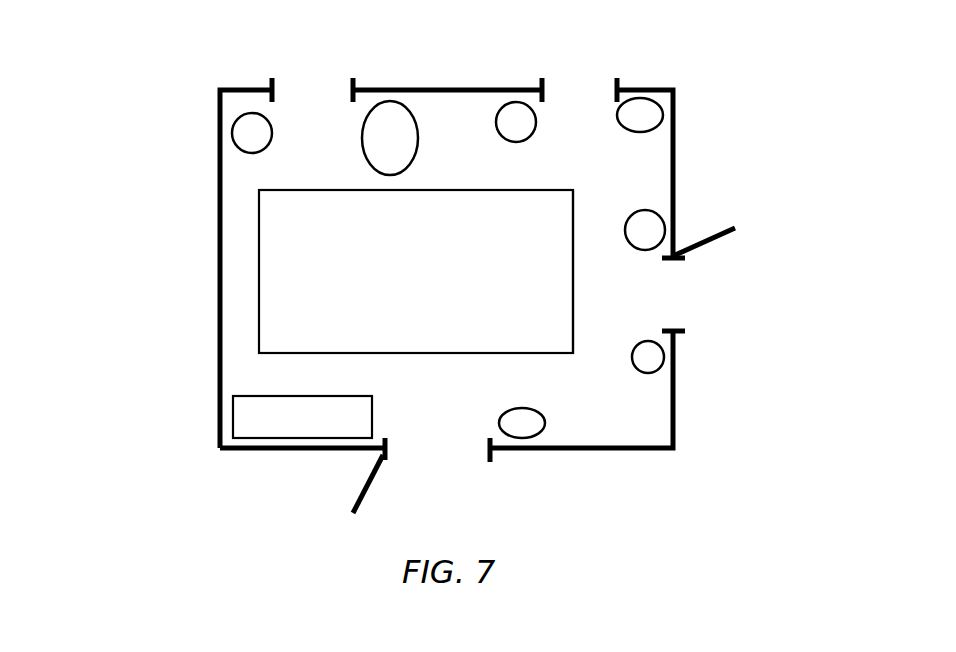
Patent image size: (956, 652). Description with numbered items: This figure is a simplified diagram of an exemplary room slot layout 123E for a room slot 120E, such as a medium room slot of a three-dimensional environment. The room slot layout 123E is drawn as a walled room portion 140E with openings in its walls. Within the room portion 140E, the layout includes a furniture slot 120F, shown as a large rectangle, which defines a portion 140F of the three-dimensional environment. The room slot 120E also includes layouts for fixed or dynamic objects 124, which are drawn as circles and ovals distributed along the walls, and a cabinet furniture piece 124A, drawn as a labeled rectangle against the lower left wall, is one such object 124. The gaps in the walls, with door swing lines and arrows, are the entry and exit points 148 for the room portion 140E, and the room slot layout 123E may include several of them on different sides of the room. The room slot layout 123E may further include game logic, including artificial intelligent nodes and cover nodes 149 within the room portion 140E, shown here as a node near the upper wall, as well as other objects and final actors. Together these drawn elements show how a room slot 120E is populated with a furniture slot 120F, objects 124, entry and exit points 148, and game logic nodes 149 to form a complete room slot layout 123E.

The room slot 120E is at (203, 70).
The furniture slot 120F is at (268, 231).
The room slot layout 123E is at (678, 44).
The fixed or dynamic objects 124 is at (246, 134).
The cabinet furniture piece 124A is at (248, 413).
The room portion 140E is at (676, 440).
The portion of the 3D environment 140F is at (518, 343).
The entry and exit points 148 is at (310, 76).
The artificial intelligent nodes and cover nodes 149 is at (395, 115).